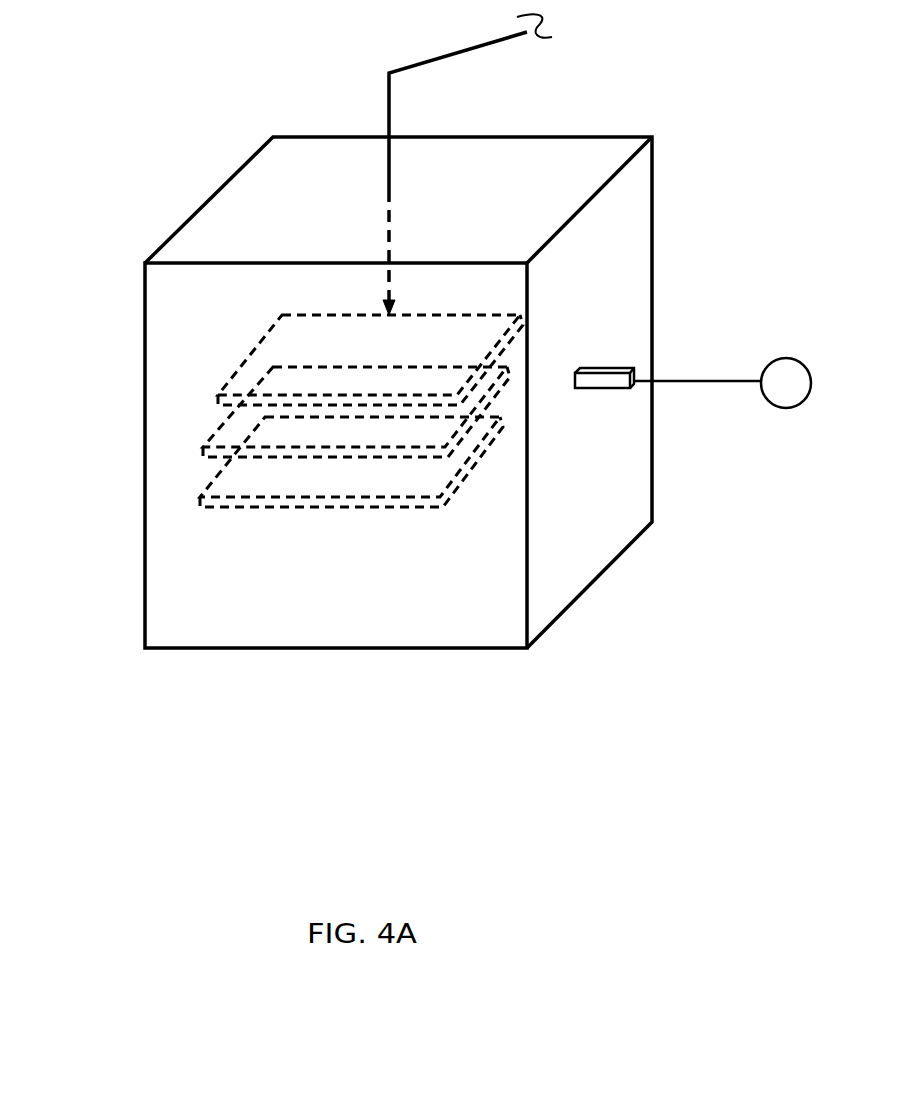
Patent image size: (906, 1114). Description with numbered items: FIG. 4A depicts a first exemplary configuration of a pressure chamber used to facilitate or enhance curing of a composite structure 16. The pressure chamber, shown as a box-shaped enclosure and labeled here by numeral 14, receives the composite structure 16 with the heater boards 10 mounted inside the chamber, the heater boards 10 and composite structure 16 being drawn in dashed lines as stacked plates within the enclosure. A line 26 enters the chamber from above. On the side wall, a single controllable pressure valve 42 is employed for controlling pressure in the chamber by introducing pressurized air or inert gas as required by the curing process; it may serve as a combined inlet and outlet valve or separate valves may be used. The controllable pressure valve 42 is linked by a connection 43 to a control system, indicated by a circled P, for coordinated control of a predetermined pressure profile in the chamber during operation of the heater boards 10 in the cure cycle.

The heater boards 10 is at (242, 363).
The chamber 14 is at (233, 205).
The composite structure 16 is at (213, 437).
The gas supply line 26 is at (437, 62).
The controllable pressure valve 42 is at (636, 368).
The connection 43 is at (728, 386).